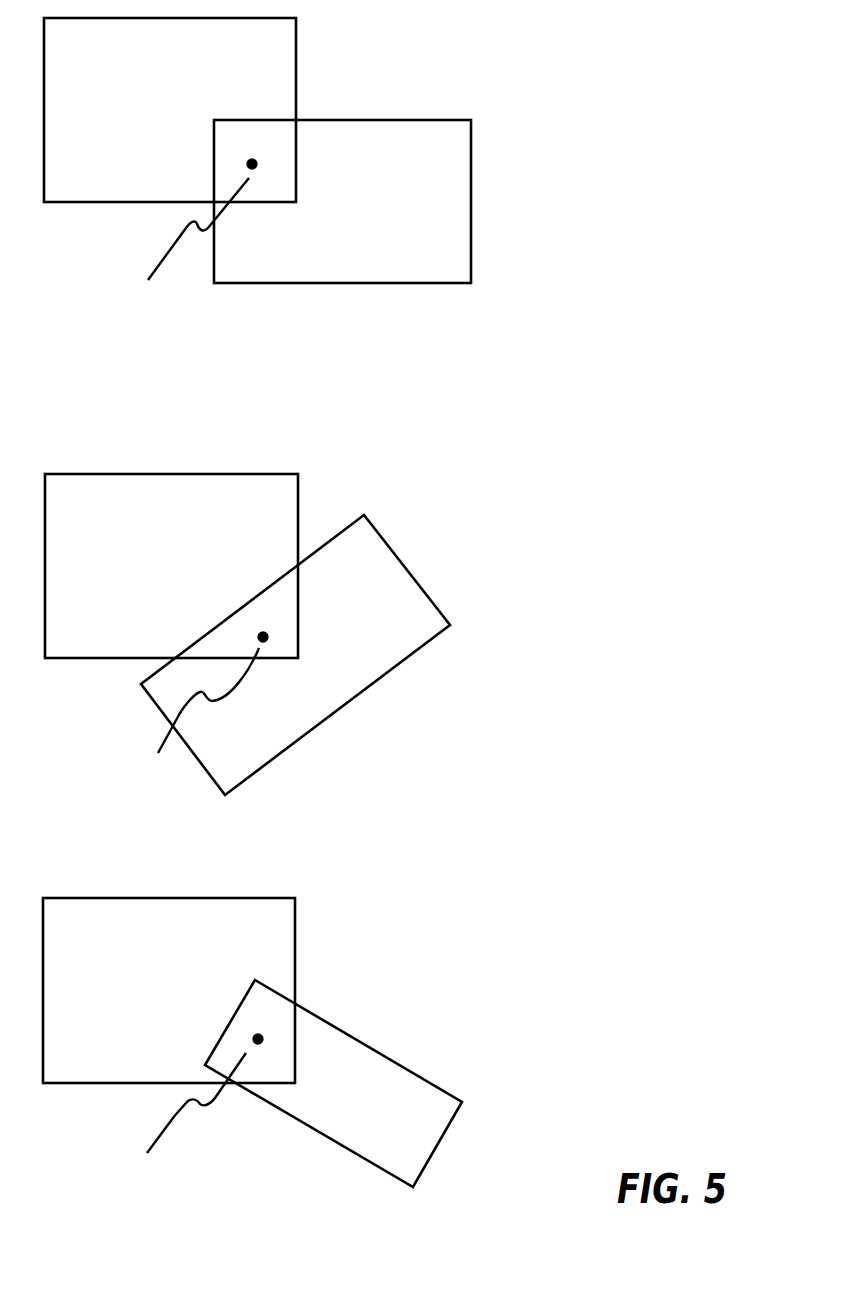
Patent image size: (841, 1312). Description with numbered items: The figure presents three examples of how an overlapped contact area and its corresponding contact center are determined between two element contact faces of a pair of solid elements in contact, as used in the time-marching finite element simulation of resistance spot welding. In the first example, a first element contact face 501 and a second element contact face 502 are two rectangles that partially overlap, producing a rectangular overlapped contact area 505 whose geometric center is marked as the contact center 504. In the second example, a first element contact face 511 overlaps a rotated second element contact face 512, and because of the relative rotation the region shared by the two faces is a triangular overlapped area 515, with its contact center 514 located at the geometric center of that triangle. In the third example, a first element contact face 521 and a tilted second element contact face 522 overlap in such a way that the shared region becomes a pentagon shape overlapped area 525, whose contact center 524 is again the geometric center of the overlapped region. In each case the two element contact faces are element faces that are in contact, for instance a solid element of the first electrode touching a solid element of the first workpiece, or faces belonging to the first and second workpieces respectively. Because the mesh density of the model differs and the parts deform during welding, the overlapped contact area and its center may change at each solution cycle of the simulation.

The first element contact face 501 is at (111, 57).
The second element contact face 502 is at (447, 271).
The contact center 504 is at (181, 244).
The rectangular overlapped contact area 505 is at (258, 146).
The first element contact face 511 is at (114, 510).
The second element contact face 512 is at (413, 641).
The contact center 514 is at (191, 715).
The triangular overlapped area 515 is at (289, 616).
The first element contact face 521 is at (105, 935).
The second element contact face 522 is at (415, 1148).
The contact center 524 is at (178, 1118).
The pentagon shape overlapped area 525 is at (277, 1018).